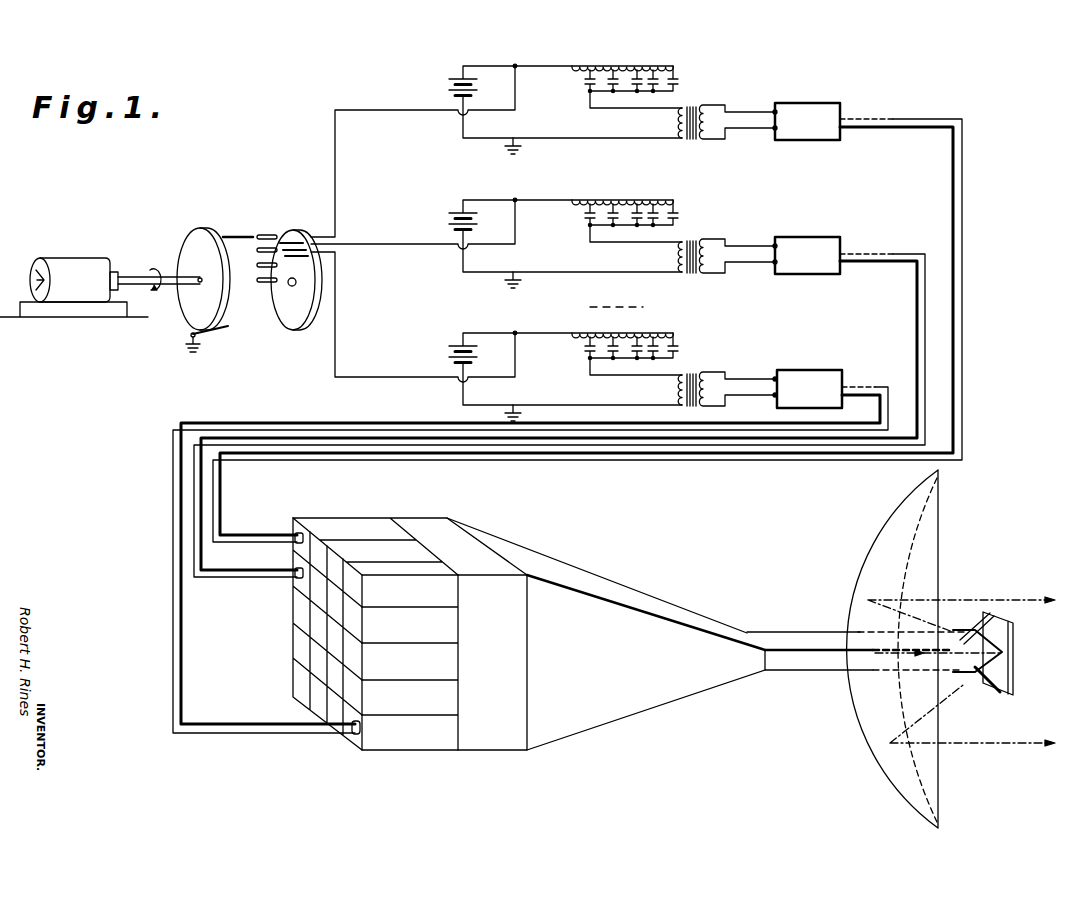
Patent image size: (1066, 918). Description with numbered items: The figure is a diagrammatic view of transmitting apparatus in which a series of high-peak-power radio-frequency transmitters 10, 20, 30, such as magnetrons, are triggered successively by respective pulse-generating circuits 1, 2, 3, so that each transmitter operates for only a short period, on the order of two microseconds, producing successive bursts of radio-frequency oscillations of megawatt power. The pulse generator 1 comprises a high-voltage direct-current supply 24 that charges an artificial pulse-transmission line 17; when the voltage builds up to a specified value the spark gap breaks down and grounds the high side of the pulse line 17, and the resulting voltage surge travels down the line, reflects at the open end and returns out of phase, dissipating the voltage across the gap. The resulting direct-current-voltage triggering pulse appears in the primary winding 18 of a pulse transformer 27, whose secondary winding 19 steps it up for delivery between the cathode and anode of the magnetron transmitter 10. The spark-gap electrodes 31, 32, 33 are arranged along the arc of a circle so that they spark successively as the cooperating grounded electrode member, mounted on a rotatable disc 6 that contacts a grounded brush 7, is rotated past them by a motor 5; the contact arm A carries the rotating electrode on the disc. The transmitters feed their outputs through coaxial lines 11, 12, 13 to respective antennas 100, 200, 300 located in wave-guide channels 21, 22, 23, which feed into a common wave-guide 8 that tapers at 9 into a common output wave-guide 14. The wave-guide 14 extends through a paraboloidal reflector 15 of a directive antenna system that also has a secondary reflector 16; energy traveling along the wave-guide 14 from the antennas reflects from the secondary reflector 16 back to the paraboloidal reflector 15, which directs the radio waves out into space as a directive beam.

The pulse-generating circuit 1 is at (614, 146).
The pulse-generating circuit 2 is at (602, 252).
The pulse-generating circuit 3 is at (587, 336).
The motor 5 is at (57, 262).
The rotatable disc 6 is at (196, 232).
The grounded brush 7 is at (208, 331).
The contact arm A is at (237, 231).
The common wave-guide 8 is at (380, 630).
The taper 9 is at (602, 717).
The radio-frequency transmitter 10 is at (828, 111).
The coaxial line 11 is at (955, 85).
The coaxial line 12 is at (918, 277).
The coaxial line 13 is at (889, 388).
The common output wave-guide 14 is at (805, 662).
The paraboloidal reflector 15 is at (872, 735).
The secondary reflector 16 is at (1002, 637).
The artificial pulse-transmission line 17 is at (666, 63).
The primary winding 18 is at (676, 116).
The secondary winding 19 is at (712, 121).
The radio-frequency transmitter 20 is at (828, 247).
The wave-guide channel 21 is at (300, 546).
The wave-guide channel 22 is at (292, 556).
The wave-guide channel 23 is at (354, 712).
The high-voltage direct-current supply 24 is at (450, 79).
The pulse transformer 27 is at (701, 131).
The radio-frequency transmitter 30 is at (802, 375).
The spark-gap electrode 31 is at (263, 234).
The spark-gap electrode 32 is at (293, 240).
The spark-gap electrode 33 is at (278, 262).
The antenna 100 is at (292, 532).
The antenna 200 is at (293, 571).
The antenna 300 is at (361, 727).